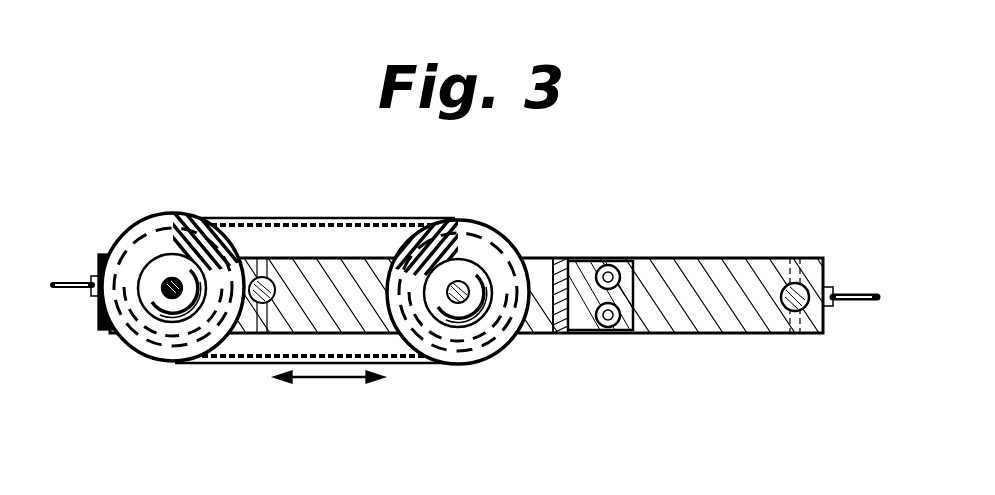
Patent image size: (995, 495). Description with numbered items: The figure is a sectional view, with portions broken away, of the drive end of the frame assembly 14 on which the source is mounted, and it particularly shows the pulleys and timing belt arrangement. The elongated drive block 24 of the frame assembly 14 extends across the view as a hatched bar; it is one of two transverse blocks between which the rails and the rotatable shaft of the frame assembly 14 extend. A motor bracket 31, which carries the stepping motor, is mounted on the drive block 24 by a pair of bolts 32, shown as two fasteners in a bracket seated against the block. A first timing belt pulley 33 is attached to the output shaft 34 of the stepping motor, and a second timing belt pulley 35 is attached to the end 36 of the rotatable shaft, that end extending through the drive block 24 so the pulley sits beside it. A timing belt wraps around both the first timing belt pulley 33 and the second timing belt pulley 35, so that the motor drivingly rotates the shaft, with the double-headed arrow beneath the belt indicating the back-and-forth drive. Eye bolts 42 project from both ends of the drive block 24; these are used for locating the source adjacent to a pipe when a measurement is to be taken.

The frame assembly 14 is at (682, 335).
The drive block 24 is at (712, 282).
The motor bracket 31 is at (558, 335).
The bolts 32 is at (622, 262).
The first timing belt pulley 33 is at (493, 228).
The output shaft 34 is at (478, 271).
The second timing belt pulley 35 is at (122, 240).
The end of shaft 36 is at (165, 285).
The eye bolts 42 is at (56, 290).